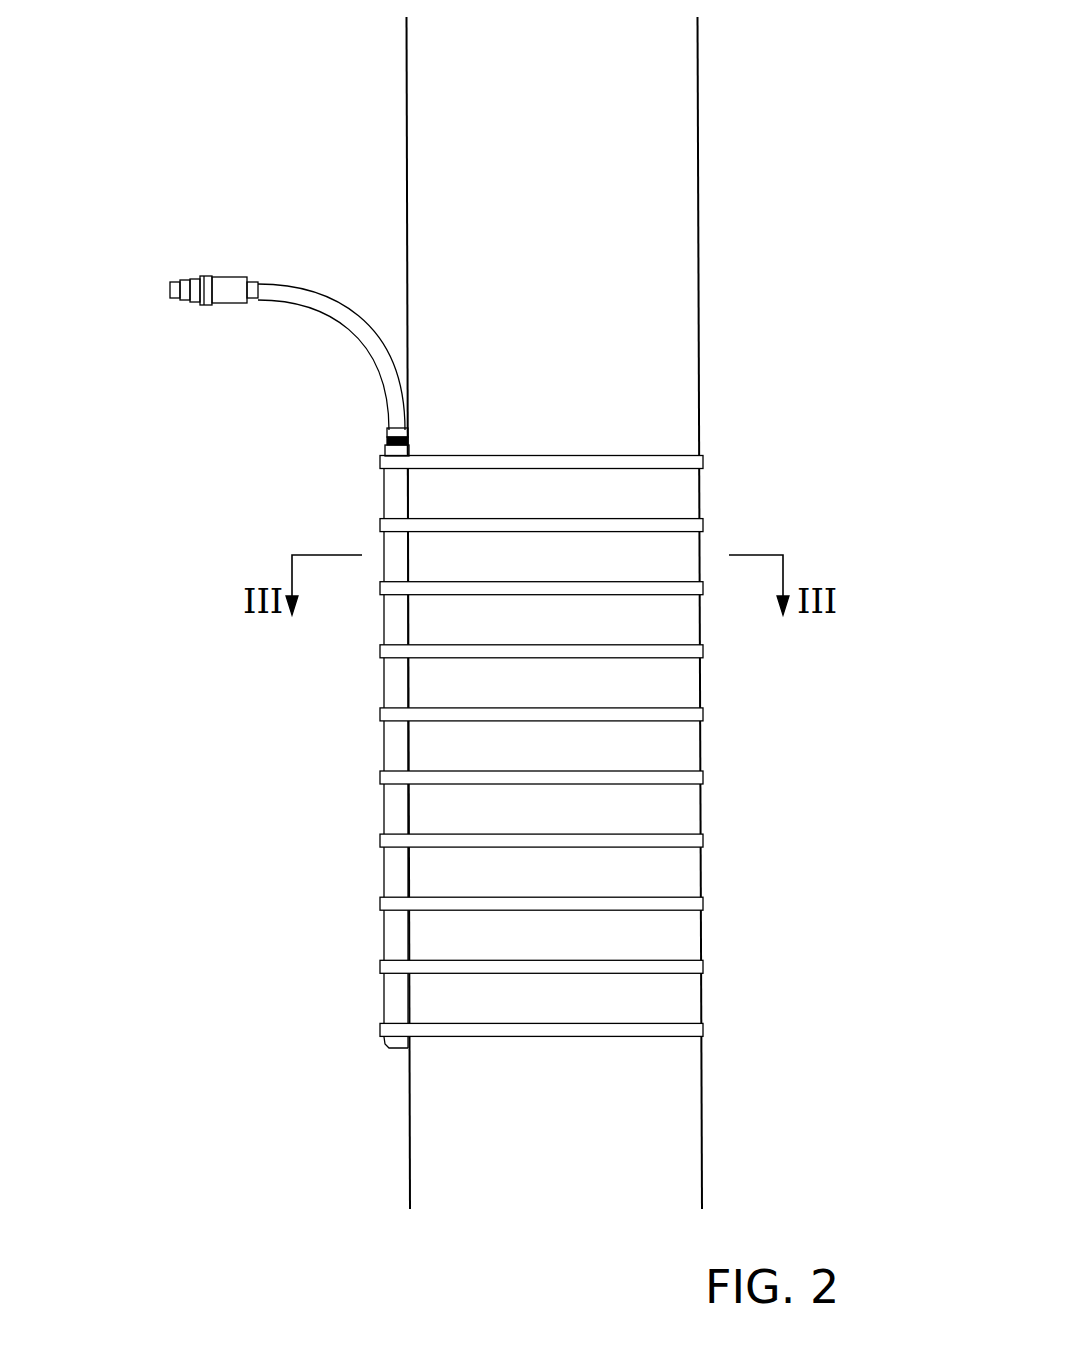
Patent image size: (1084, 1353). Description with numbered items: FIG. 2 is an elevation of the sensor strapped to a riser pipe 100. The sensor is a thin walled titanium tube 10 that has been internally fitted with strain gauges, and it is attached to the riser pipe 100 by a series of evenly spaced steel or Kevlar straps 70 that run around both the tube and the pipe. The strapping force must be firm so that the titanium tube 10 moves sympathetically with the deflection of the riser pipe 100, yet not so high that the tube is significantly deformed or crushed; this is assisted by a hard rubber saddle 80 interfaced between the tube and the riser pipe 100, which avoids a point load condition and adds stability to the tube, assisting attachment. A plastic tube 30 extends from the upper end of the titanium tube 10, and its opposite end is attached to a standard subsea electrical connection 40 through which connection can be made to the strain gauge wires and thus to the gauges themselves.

The titanium tube 10 is at (487, 616).
The plastic tube 30 is at (320, 287).
The subsea electrical connection 40 is at (200, 303).
The straps 70 is at (700, 903).
The hard rubber saddle 80 is at (395, 997).
The riser pipe 100 is at (648, 283).